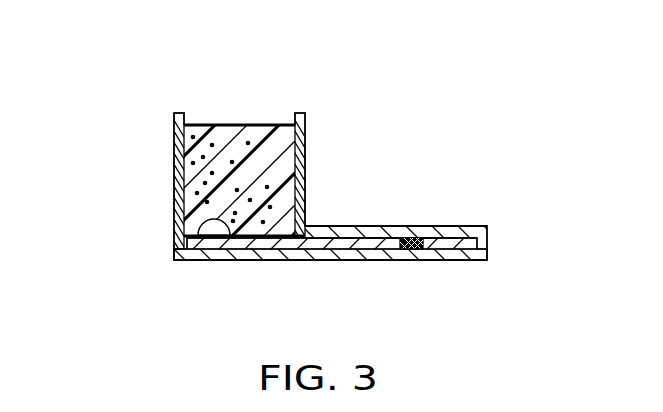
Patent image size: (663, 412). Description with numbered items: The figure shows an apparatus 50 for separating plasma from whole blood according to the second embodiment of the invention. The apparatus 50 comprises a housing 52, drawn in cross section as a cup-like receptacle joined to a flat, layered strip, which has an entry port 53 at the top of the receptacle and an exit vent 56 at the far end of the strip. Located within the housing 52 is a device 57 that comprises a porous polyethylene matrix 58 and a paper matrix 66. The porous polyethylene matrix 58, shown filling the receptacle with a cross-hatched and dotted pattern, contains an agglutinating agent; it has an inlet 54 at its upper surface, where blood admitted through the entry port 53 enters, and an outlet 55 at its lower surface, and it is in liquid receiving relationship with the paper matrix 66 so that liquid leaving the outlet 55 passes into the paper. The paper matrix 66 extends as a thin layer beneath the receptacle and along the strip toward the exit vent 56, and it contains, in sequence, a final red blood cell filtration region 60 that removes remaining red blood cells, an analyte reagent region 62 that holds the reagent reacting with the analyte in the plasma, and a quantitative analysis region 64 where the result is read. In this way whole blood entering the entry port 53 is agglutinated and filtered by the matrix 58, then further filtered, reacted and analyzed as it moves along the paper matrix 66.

The apparatus 50 is at (160, 136).
The housing 52 is at (176, 188).
The entry port 53 is at (212, 105).
The inlet 54 is at (240, 125).
The outlet 55 is at (217, 222).
The exit vent 56 is at (487, 243).
The device 57 is at (333, 205).
The porous polyethylene matrix 58 is at (288, 160).
The final red blood cell filtration region 60 is at (308, 242).
The analyte reagent region 62 is at (418, 246).
The quantitative analysis region 64 is at (455, 246).
The paper matrix 66 is at (450, 228).